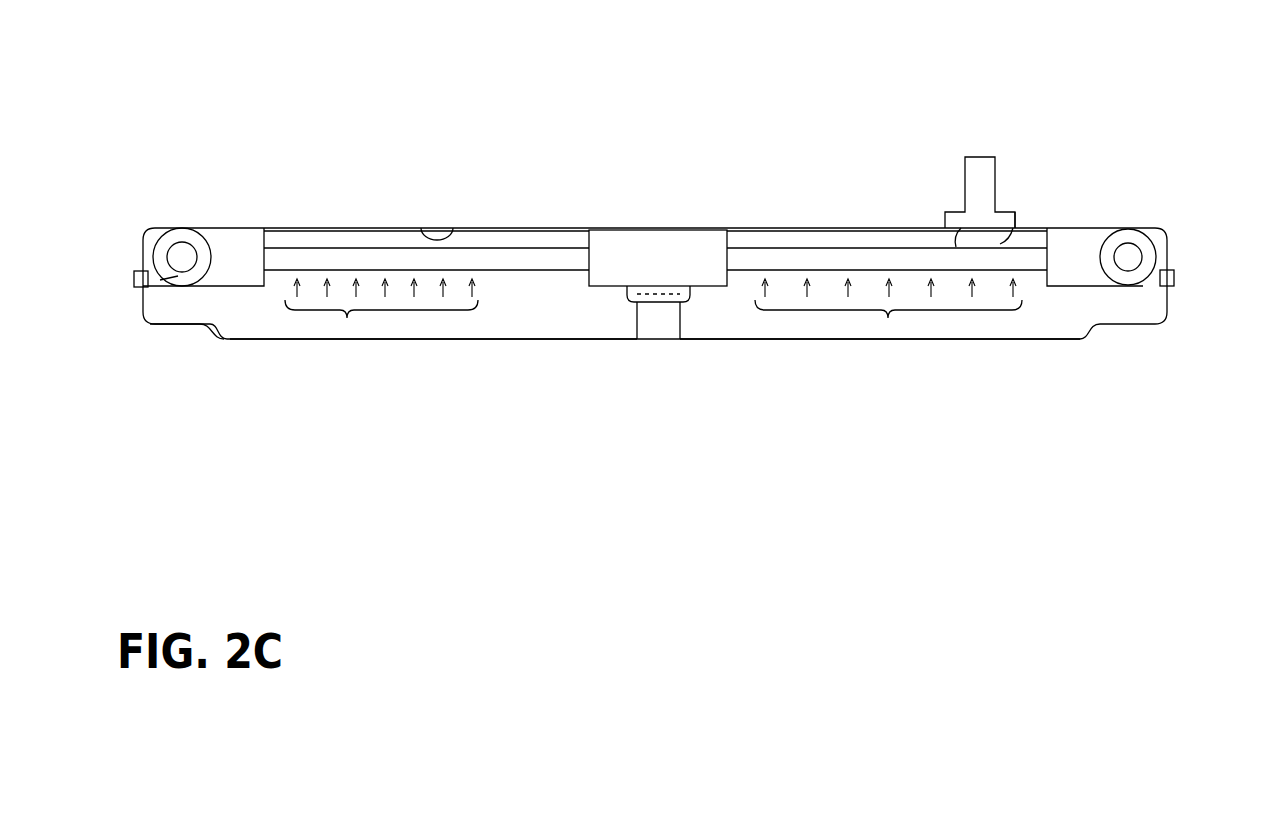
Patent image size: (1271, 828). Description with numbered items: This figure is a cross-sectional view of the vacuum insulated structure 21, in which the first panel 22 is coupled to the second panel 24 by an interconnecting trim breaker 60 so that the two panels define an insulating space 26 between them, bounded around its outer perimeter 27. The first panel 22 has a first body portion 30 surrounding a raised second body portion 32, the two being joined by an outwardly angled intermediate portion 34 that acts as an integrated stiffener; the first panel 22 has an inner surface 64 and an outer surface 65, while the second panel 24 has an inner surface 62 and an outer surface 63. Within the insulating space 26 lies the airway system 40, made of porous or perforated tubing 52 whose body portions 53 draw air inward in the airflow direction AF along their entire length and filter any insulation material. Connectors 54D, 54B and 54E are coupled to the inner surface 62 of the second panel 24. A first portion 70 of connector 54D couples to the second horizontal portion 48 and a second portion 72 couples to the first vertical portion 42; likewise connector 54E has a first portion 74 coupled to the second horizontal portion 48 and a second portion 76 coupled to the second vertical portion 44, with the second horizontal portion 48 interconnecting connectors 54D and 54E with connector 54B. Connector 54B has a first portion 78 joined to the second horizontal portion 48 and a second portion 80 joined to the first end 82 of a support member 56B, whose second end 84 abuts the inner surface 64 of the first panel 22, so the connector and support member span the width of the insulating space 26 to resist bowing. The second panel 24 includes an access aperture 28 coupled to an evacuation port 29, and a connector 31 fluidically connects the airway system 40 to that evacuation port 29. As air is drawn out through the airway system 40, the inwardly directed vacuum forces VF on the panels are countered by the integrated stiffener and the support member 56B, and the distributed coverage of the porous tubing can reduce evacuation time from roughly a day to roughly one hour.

The vacuum insulated structure 21 is at (178, 176).
The first panel 22 is at (398, 357).
The second panel 24 is at (313, 222).
The insulating space 26 is at (528, 300).
The outer perimeter 27 is at (148, 236).
The access aperture 28 is at (1013, 214).
The evacuation port 29 is at (1003, 190).
The first body portion 30 is at (168, 325).
The connector 31 is at (1000, 242).
The second body portion 32 is at (297, 340).
The intermediate portion 34 is at (215, 333).
The airway system 40 is at (492, 277).
The first vertical portion 42 is at (182, 257).
The second vertical portion 44 is at (1128, 258).
The second horizontal portion 48 is at (370, 258).
The tubing 52 is at (862, 242).
The body portions 53 is at (760, 262).
The connector 54B is at (605, 303).
The connector 54D is at (218, 297).
The connector 54E is at (1097, 297).
The support member 56B is at (673, 315).
The trim breaker 60 is at (133, 278).
The inner surface 62 is at (453, 228).
The outer surface 63 is at (355, 240).
The inner surface 64 is at (425, 339).
The outer surface 65 is at (470, 340).
The first portion 70 is at (243, 267).
The second portion 72 is at (178, 276).
The first portion 74 is at (1065, 277).
The second portion 76 is at (1155, 290).
The first portion 78 is at (607, 250).
The second portion 80 is at (687, 293).
The first end 82 is at (658, 283).
The second end 84 is at (645, 339).
The airflow direction AF is at (347, 318).
The vacuum forces VF is at (900, 243).